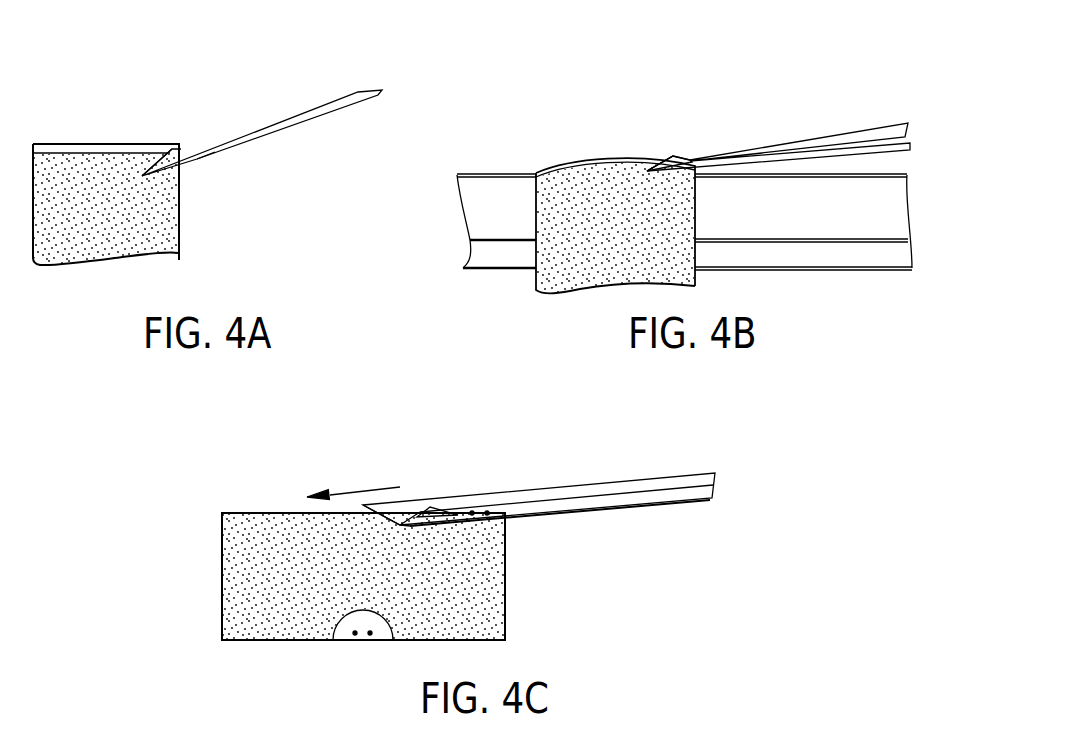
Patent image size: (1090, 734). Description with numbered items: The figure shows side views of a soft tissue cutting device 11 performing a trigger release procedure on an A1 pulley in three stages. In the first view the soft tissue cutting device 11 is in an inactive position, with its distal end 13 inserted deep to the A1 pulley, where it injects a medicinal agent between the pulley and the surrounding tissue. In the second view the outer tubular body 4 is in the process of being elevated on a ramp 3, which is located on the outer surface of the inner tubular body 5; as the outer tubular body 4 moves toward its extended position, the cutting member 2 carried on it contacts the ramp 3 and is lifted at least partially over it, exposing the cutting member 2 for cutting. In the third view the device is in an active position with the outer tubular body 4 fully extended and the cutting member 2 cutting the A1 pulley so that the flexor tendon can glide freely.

In FIG. 4B, the cutting member 2 is at (690, 162).
In FIG. 4C, the cutting member 2 is at (400, 522).
In FIG. 4A, the ramp 3 is at (165, 149).
In FIG. 4C, the ramp 3 is at (438, 507).
In FIG. 4A, the outer tubular body 4 is at (327, 117).
In FIG. 4B, the outer tubular body 4 is at (875, 125).
In FIG. 4C, the outer tubular body 4 is at (407, 503).
In FIG. 4A, the inner tubular body 5 is at (183, 160).
In FIG. 4B, the inner tubular body 5 is at (670, 157).
In FIG. 4C, the inner tubular body 5 is at (403, 527).
In FIG. 4A, the soft tissue cutting device 11 is at (235, 108).
In FIG. 4B, the soft tissue cutting device 11 is at (812, 92).
In FIG. 4C, the soft tissue cutting device 11 is at (635, 462).
In FIG. 4A, the distal end 13 is at (150, 160).